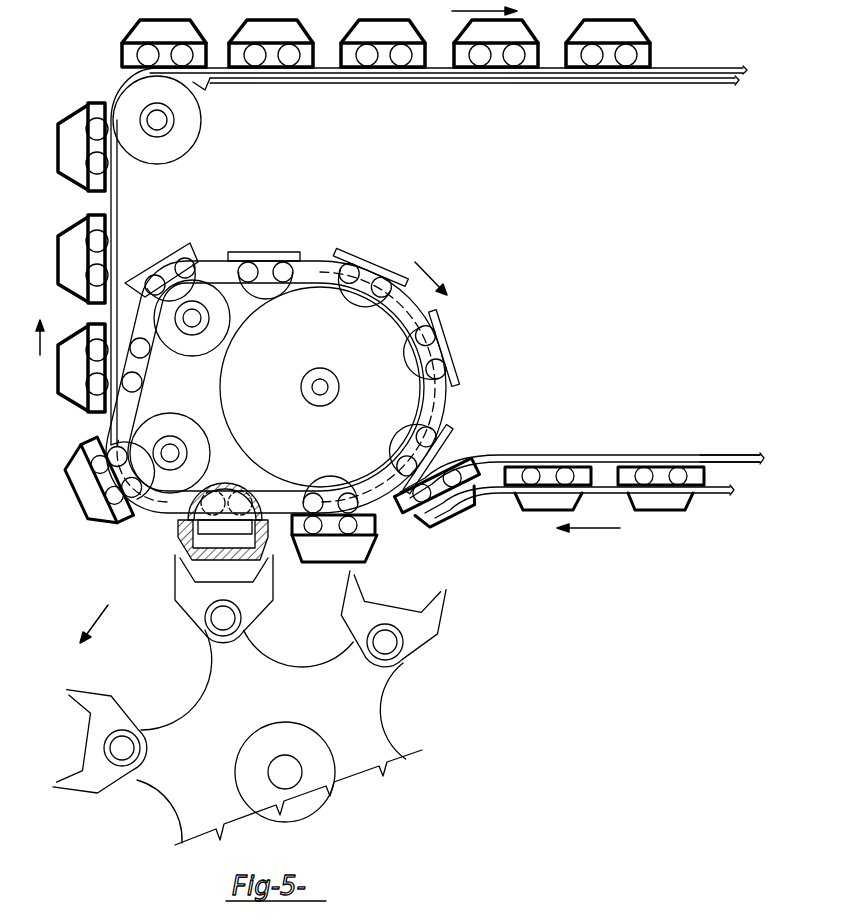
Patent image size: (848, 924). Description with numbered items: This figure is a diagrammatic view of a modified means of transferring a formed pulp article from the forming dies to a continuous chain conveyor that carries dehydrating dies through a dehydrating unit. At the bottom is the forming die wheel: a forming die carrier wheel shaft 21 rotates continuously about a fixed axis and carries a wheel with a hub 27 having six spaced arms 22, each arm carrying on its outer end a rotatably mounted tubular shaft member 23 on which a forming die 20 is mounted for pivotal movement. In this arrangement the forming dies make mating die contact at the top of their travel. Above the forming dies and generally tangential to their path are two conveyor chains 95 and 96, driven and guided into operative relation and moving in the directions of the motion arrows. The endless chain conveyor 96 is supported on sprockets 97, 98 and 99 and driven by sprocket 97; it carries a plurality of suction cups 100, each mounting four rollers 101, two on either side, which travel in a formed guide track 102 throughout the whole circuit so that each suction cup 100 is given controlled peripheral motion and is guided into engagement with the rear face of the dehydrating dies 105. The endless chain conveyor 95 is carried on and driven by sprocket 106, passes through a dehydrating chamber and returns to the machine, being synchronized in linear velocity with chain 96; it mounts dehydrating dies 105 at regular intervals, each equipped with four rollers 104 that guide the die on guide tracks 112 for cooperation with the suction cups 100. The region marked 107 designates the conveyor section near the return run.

The forming die 20 is at (275, 603).
The forming die carrier wheel shaft 21 is at (293, 768).
The arm 22 is at (380, 695).
The tubular shaft member 23 is at (205, 618).
The hub 27 is at (300, 731).
The conveyor chain 95 is at (115, 228).
The conveyor chain 96 is at (433, 405).
The sprocket 97 is at (393, 325).
The sprocket 98 is at (188, 424).
The sprocket 99 is at (185, 352).
The suction cup 100 is at (337, 253).
The roller 101 is at (378, 277).
The guide track 102 is at (283, 498).
The roller 104 is at (643, 463).
The dehydrating die 105 is at (178, 541).
The sprocket 106 is at (193, 128).
The conveyor section 107 is at (730, 447).
The guide track 112 is at (726, 86).